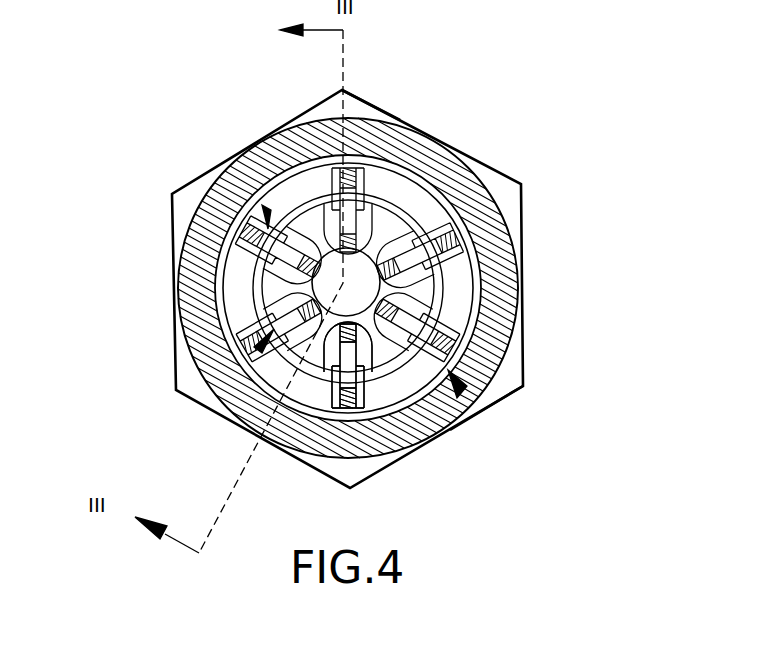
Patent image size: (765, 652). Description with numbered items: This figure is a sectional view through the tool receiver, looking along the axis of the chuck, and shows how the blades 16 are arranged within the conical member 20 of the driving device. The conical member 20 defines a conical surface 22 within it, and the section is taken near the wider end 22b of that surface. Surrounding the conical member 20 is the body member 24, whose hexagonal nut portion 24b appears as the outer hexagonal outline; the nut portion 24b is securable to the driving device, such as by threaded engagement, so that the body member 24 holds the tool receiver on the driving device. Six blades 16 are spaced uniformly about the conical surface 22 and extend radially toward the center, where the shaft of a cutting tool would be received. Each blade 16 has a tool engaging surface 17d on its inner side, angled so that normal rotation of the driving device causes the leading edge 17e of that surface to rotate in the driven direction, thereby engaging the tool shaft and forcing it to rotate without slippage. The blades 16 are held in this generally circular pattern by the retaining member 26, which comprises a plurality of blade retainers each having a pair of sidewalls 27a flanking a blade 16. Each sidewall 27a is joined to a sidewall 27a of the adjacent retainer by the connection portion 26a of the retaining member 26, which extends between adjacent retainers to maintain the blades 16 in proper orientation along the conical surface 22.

The blades 16 is at (262, 346).
The tool engaging surface 17d is at (366, 258).
The leading edge 17e is at (338, 237).
The conical member 20 is at (480, 413).
The conical surface 22 is at (443, 197).
The wider end 22b is at (455, 210).
The body member 24 is at (530, 182).
The hexagonal nut portion 24b is at (367, 100).
The retaining member 26 is at (252, 200).
The connection portion 26a is at (397, 358).
The sidewalls 27a is at (232, 163).